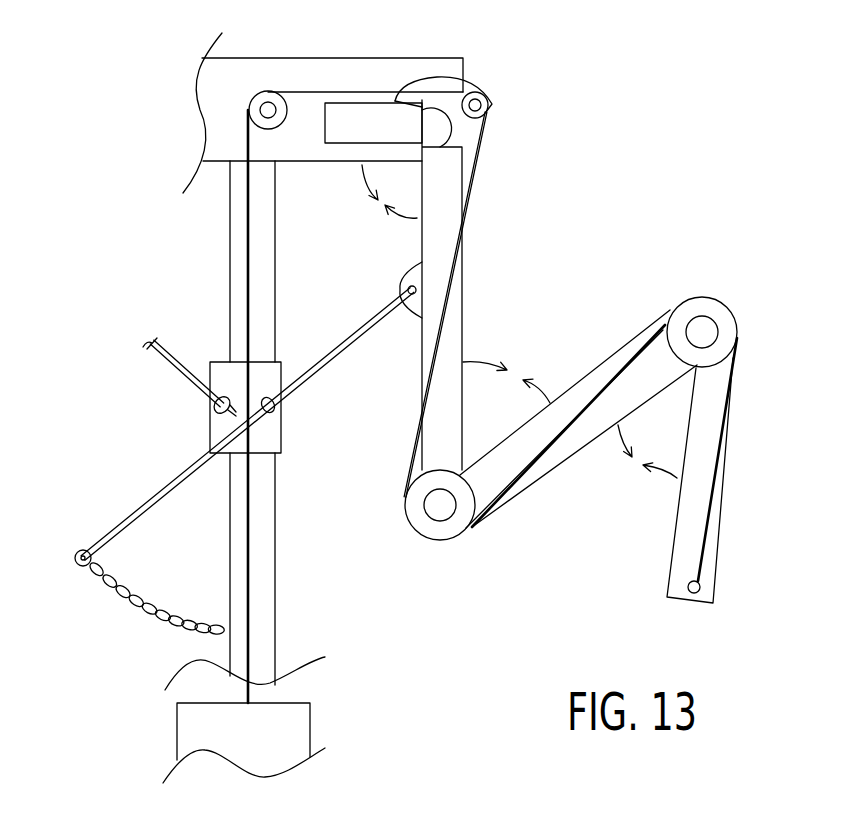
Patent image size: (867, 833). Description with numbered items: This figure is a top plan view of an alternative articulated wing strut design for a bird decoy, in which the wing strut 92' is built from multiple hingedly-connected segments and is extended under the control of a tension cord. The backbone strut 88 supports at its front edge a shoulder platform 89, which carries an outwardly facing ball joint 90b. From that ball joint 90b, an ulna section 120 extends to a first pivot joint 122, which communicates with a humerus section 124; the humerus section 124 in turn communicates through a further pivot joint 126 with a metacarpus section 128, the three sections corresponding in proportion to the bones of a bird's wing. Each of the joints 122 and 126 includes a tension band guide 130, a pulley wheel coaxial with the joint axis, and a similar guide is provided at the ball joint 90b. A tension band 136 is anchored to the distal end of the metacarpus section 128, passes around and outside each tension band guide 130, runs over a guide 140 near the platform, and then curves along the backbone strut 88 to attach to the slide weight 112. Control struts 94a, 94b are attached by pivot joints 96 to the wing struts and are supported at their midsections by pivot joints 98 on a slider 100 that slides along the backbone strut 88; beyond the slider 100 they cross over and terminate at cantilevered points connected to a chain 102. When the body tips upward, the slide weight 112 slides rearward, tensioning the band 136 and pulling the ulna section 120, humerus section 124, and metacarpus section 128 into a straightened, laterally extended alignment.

The backbone strut 88 is at (260, 572).
The shoulder platform 89 is at (235, 67).
The ball joint 90b is at (490, 86).
The wing strut 92' is at (548, 284).
The control strut 94a is at (182, 380).
The control strut 94b is at (340, 352).
The pivot joint 96 is at (408, 268).
The pivot joint 98 is at (275, 395).
The slider 100 is at (268, 440).
The chain 102 is at (137, 603).
The slide weight 112 is at (300, 732).
The ulna section 120 is at (455, 312).
The first pivot joint 122 is at (452, 554).
The humerus section 124 is at (538, 483).
The pivot joint 126 is at (737, 293).
The metacarpus section 128 is at (685, 528).
The tension band guide 130 is at (488, 113).
The tension band 136 is at (247, 235).
The pulley 140 is at (295, 112).